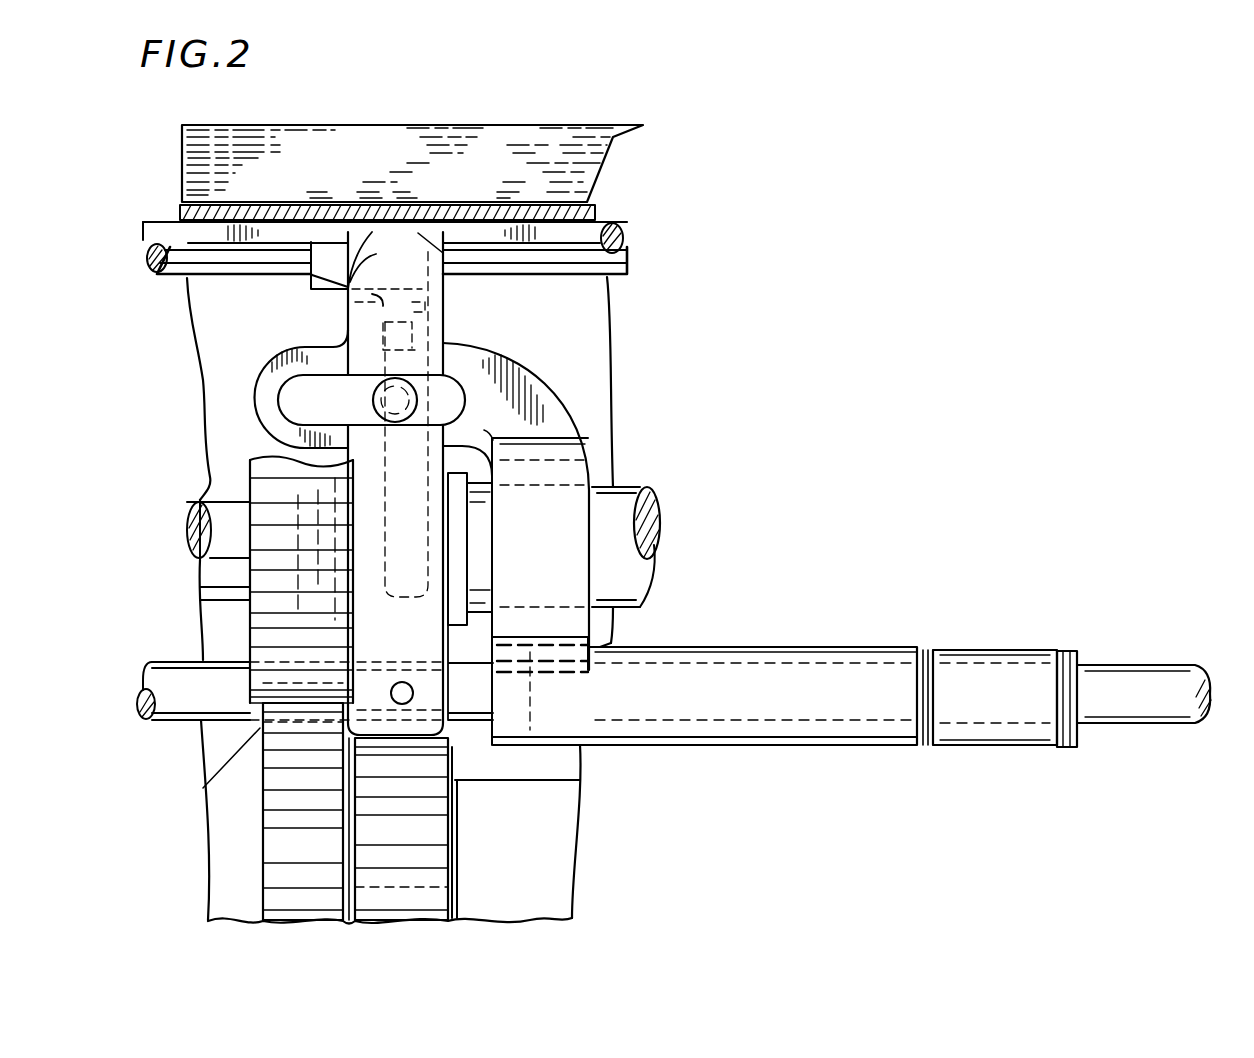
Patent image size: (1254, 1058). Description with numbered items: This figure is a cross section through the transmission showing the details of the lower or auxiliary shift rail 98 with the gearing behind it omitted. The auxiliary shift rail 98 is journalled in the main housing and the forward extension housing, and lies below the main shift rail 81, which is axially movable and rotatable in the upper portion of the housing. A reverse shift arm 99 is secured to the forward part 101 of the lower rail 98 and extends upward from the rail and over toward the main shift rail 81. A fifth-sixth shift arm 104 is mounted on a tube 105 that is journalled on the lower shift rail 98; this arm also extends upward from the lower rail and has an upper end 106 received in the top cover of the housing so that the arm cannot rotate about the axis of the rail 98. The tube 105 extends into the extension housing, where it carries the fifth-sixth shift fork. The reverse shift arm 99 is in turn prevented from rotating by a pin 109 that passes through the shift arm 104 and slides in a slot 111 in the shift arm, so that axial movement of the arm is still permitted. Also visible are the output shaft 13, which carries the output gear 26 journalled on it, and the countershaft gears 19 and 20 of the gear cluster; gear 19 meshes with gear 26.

The shift rail 81 is at (625, 233).
The upper end 106 is at (347, 290).
The pin 109 is at (412, 402).
The slot 111 is at (290, 407).
The 5-6 shift arm 104 is at (570, 500).
The output gear 26 is at (248, 535).
The reverse shift arm 99 is at (418, 512).
The output shaft 13 is at (662, 524).
The forward part 101 is at (172, 662).
The tube 105 is at (790, 660).
The auxiliary shift rail 98 is at (1123, 680).
The gear 19 is at (265, 830).
The gear 20 is at (436, 898).